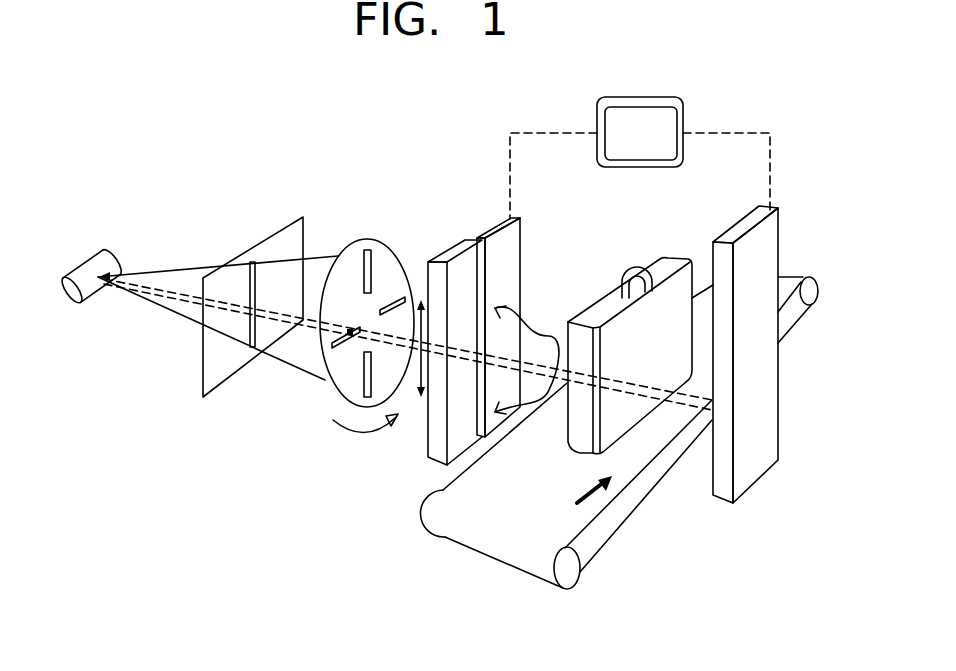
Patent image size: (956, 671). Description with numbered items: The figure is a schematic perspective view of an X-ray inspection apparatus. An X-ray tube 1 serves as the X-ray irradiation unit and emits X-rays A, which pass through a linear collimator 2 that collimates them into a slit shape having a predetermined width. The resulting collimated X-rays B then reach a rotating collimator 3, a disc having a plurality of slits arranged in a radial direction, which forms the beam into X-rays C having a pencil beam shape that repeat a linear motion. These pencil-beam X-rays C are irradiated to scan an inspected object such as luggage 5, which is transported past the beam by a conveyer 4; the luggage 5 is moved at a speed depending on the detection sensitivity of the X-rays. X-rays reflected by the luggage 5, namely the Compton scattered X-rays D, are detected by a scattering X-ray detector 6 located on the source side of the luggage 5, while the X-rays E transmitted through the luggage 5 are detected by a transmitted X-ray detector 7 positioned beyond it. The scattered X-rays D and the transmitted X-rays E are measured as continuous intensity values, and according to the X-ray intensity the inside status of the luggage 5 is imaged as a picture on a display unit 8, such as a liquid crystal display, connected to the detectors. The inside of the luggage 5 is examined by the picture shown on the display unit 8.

The X-ray tube 1 is at (85, 263).
The linear collimator 2 is at (253, 247).
The rotating collimator 3 is at (358, 240).
The conveyer 4 is at (497, 560).
The luggage 5 is at (670, 258).
The scattering X-ray detector 6 is at (480, 226).
The transmitted X-ray detector 7 is at (778, 209).
The display unit 8 is at (684, 119).
The X-rays A is at (178, 268).
The collimated X-rays B is at (297, 370).
The X-rays having a pencil beam shape C is at (369, 325).
The Compton scattered X-rays D is at (536, 330).
The transmitted X-rays E is at (667, 403).